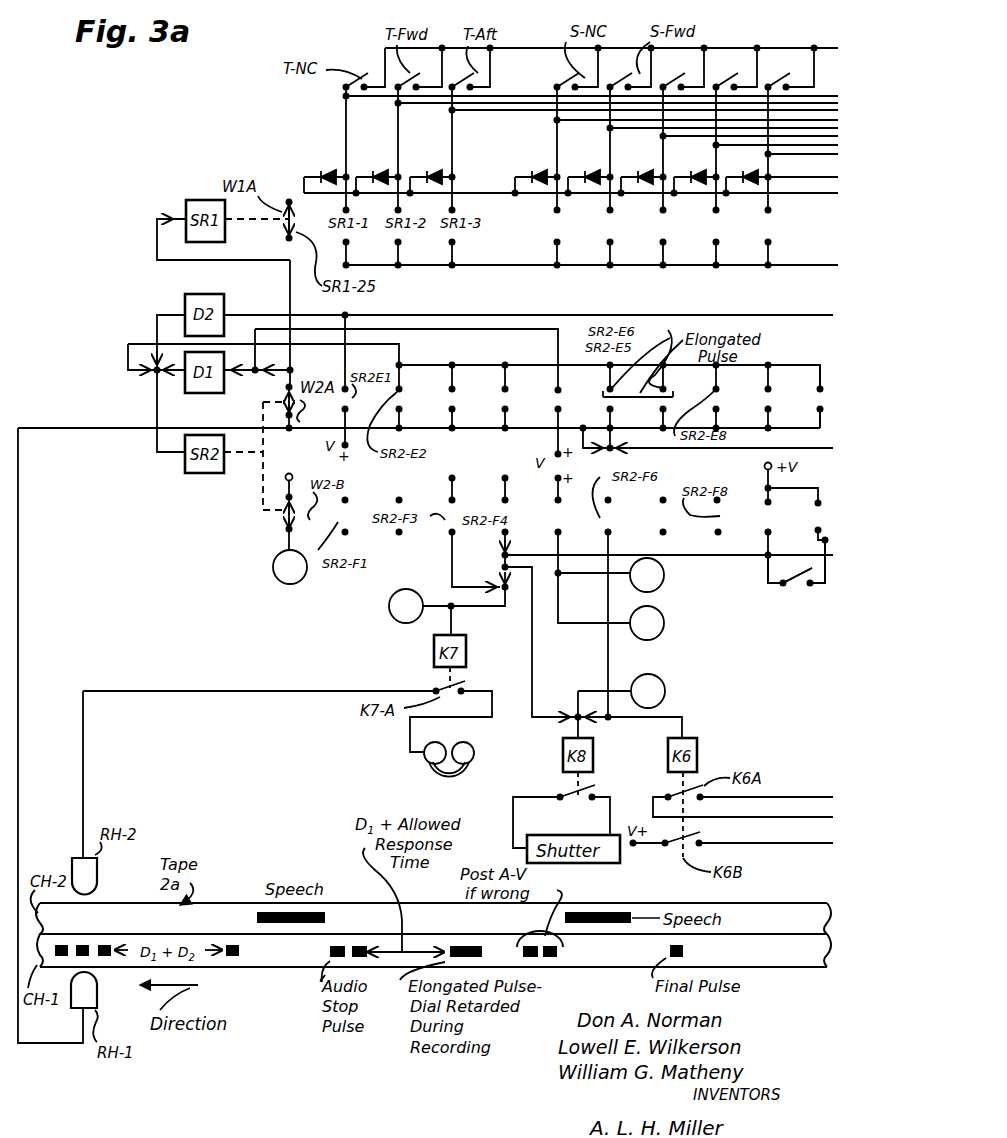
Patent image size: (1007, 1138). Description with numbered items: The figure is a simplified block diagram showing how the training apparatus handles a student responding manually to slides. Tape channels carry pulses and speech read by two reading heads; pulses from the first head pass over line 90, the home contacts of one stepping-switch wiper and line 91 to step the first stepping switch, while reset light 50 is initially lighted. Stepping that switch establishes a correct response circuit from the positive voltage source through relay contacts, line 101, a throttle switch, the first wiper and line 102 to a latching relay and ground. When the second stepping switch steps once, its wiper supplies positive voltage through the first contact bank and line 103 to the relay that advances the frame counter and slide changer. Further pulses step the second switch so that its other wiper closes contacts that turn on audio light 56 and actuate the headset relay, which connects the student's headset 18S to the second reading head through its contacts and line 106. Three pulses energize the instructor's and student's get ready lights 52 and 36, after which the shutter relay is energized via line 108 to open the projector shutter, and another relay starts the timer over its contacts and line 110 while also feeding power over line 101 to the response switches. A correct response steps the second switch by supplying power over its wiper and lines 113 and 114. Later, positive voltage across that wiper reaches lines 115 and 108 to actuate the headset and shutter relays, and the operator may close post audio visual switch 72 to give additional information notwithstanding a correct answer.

The line 101 is at (728, 50).
The line 102 is at (650, 265).
The line 103 is at (493, 315).
The line 91 is at (290, 297).
The line 90 is at (40, 428).
The line 114 is at (156, 408).
The line 113 is at (800, 368).
The line 115 is at (705, 552).
The line 108 is at (512, 555).
The line 106 is at (272, 660).
The line 110 is at (818, 797).
The reset light 50 is at (273, 567).
The get ready light 52 is at (634, 566).
The audio light 56 is at (389, 613).
The get ready light 36 is at (664, 626).
The post audio visual switch 72 is at (796, 580).
The student's headset 18S is at (474, 753).